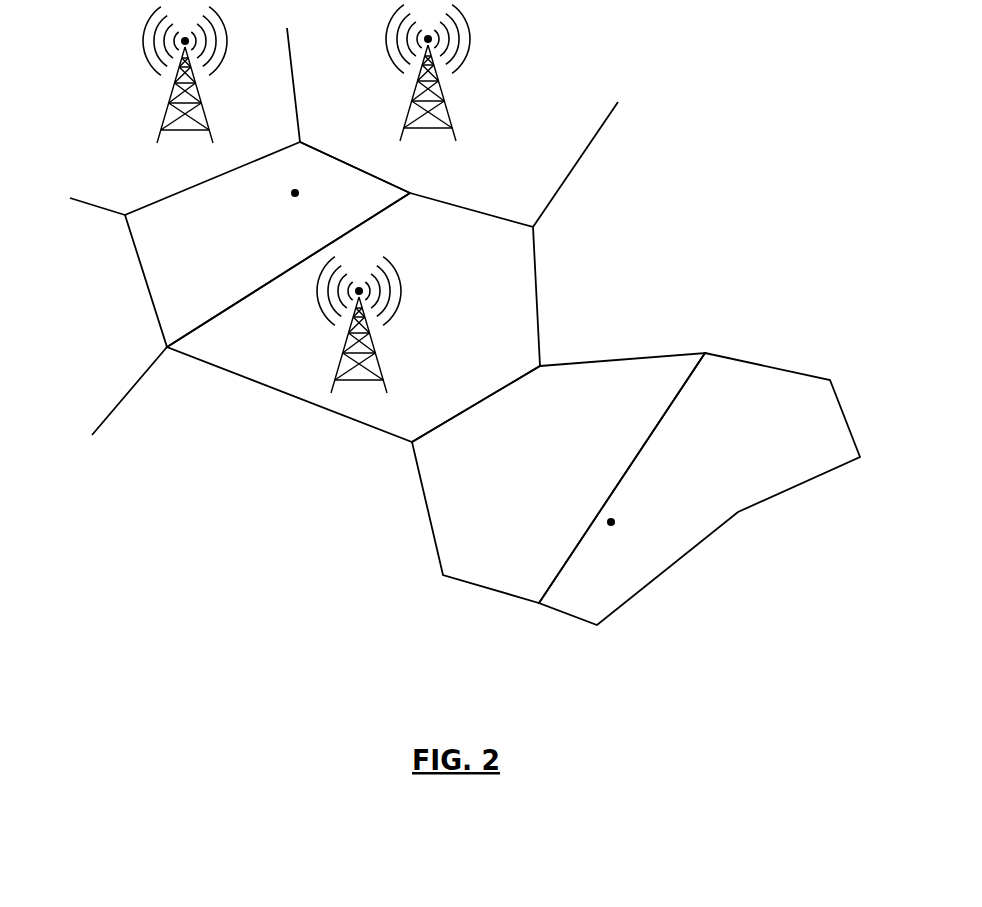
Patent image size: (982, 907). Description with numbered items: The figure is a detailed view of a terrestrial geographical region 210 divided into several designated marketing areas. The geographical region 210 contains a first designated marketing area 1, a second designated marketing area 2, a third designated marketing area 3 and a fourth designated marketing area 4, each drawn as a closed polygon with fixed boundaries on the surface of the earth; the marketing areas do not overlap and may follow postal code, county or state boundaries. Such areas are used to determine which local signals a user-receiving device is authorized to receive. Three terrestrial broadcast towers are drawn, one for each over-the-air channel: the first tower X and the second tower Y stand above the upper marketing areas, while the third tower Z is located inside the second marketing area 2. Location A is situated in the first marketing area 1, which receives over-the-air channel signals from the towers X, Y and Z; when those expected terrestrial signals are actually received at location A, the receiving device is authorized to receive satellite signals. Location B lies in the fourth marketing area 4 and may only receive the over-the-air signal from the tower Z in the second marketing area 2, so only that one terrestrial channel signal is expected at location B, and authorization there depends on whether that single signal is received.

The terrestrial geographical region 210 is at (128, 522).
The first designated marketing area 1 is at (267, 244).
The second designated marketing area 2 is at (353, 292).
The third designated marketing area 3 is at (558, 478).
The fourth designated marketing area 4 is at (699, 489).
The Location A is at (306, 193).
The Location B is at (619, 534).
The Channel X is at (473, 73).
The Channel Y is at (132, 75).
The Channel Z is at (399, 325).